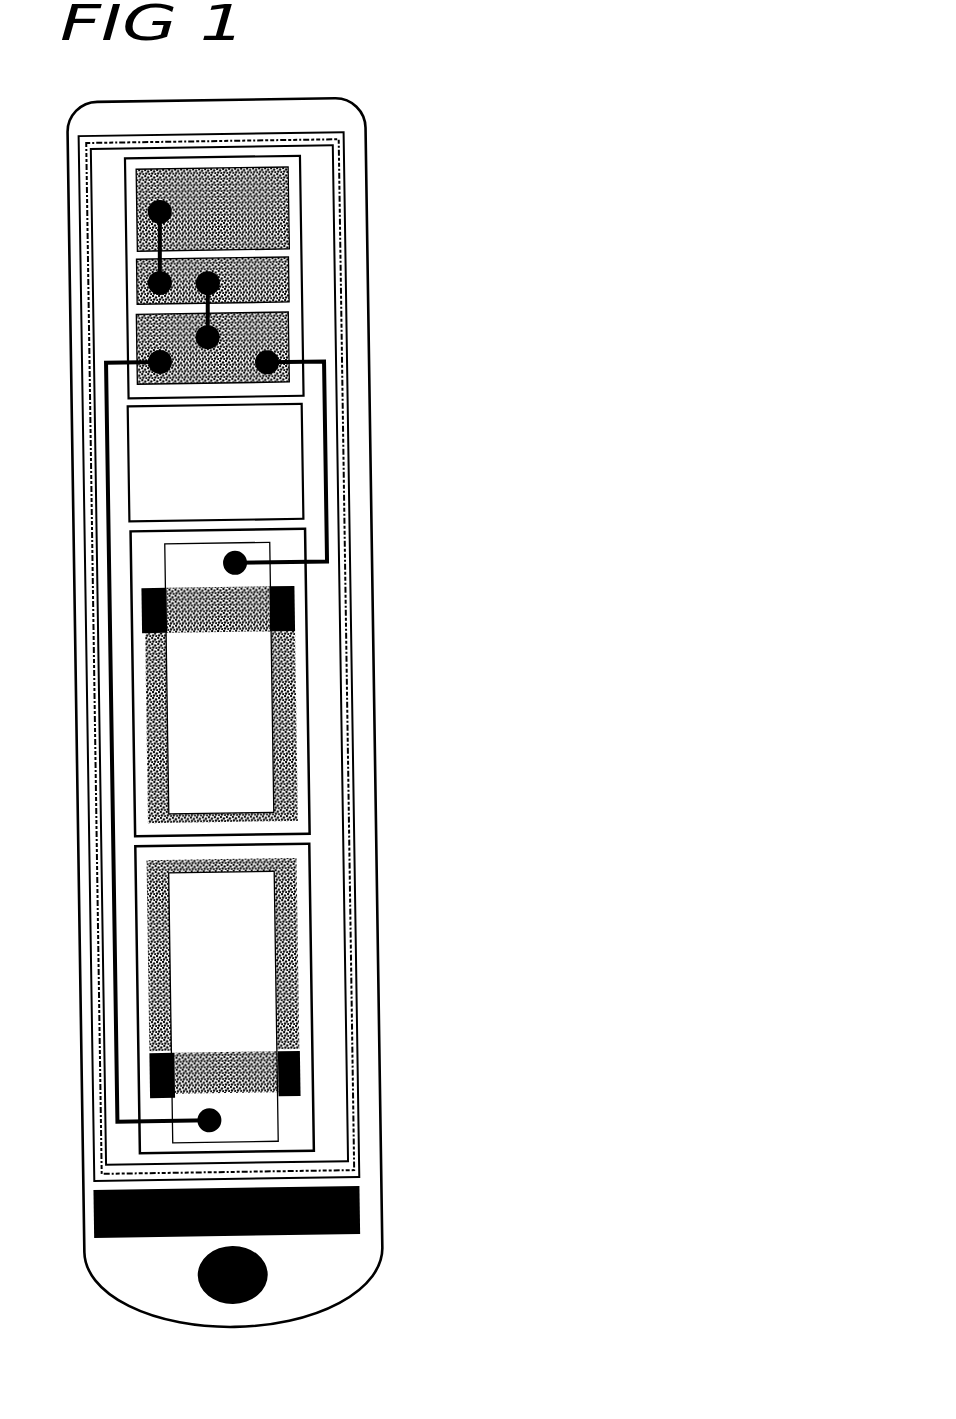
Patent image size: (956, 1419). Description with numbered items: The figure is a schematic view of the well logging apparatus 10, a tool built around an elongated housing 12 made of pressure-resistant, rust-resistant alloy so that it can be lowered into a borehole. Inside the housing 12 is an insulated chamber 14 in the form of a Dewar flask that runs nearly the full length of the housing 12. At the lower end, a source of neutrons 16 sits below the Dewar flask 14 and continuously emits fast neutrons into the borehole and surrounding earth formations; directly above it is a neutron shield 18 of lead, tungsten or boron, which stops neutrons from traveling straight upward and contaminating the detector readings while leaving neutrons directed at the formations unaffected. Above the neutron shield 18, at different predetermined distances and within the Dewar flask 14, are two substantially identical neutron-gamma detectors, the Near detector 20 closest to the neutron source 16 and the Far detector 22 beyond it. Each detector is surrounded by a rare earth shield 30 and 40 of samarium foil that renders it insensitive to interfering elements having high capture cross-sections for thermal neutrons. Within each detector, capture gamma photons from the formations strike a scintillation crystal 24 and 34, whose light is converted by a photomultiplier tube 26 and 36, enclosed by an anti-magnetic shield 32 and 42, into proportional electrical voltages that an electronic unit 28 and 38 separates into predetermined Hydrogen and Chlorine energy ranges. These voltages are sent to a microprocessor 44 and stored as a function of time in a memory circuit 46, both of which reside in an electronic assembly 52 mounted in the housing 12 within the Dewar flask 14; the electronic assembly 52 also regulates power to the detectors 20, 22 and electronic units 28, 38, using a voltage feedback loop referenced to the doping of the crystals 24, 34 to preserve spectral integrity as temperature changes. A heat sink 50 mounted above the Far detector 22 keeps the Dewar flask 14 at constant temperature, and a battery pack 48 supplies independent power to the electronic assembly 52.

The well logging apparatus 10 is at (614, 512).
The housing 12 is at (382, 1185).
The insulated chamber 14 is at (333, 142).
The source of neutrons 16 is at (267, 1268).
The neutron shield 18 is at (360, 1220).
The Near N-G detector 20 is at (310, 855).
The Far N-G detector 22 is at (312, 798).
The scintillation crystal 24 is at (242, 925).
The photomultiplier tube 26 is at (300, 1062).
The electronic unit 28 is at (278, 1140).
The shield 30 is at (285, 979).
The anti-magnetic shield 32 is at (300, 1083).
The scintillation crystal 34 is at (240, 751).
The photomultiplier tube 36 is at (290, 620).
The electronic unit 38 is at (241, 538).
The shield 40 is at (290, 675).
The anti-magnetic shield 42 is at (268, 583).
The microprocessor 44 is at (273, 335).
The memory circuit 46 is at (263, 279).
The battery pack 48 is at (267, 234).
The heat sink 50 is at (270, 462).
The electronic assembly 52 is at (300, 187).